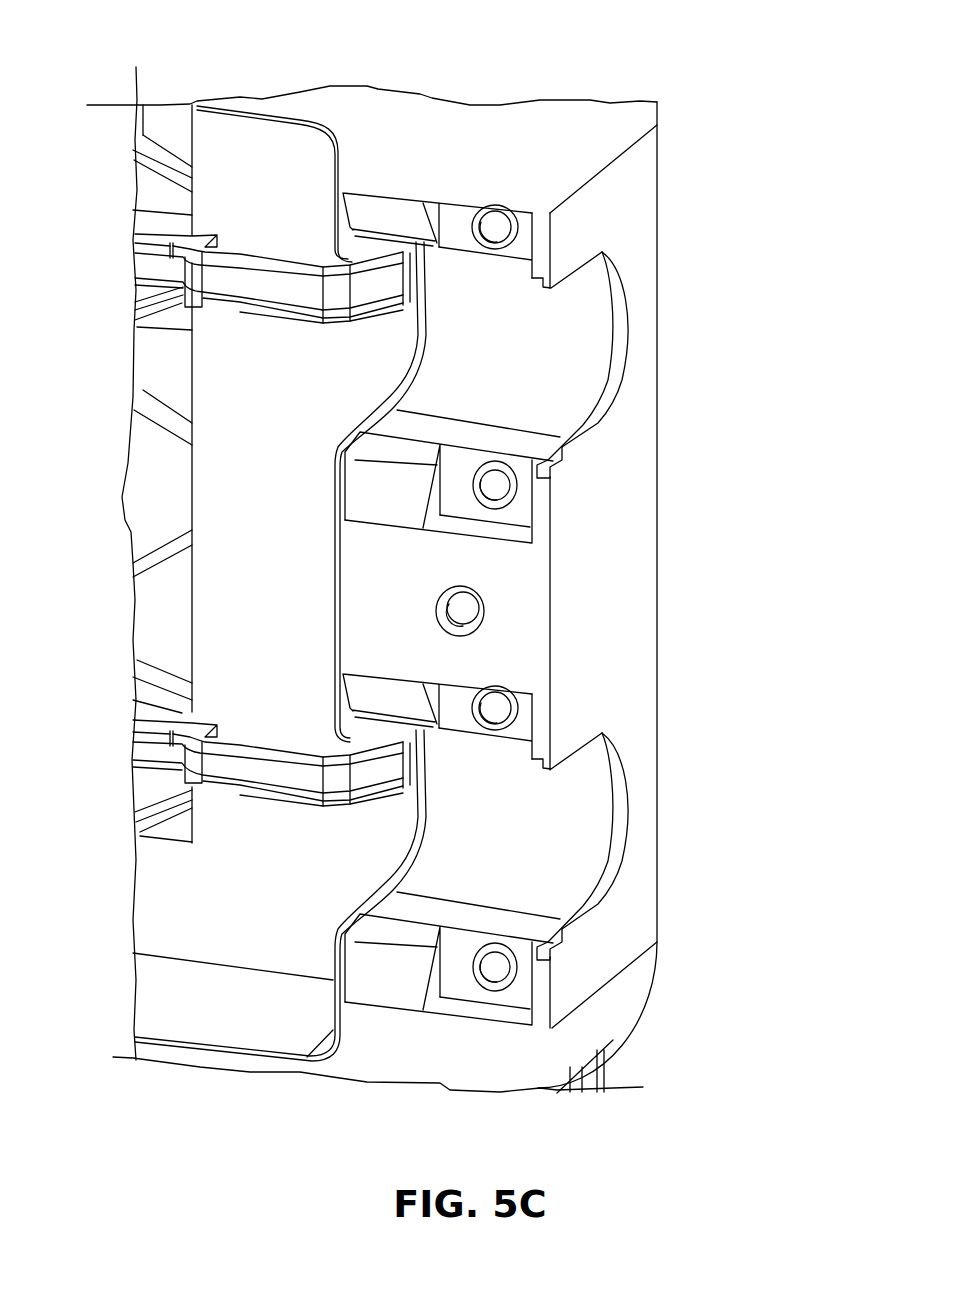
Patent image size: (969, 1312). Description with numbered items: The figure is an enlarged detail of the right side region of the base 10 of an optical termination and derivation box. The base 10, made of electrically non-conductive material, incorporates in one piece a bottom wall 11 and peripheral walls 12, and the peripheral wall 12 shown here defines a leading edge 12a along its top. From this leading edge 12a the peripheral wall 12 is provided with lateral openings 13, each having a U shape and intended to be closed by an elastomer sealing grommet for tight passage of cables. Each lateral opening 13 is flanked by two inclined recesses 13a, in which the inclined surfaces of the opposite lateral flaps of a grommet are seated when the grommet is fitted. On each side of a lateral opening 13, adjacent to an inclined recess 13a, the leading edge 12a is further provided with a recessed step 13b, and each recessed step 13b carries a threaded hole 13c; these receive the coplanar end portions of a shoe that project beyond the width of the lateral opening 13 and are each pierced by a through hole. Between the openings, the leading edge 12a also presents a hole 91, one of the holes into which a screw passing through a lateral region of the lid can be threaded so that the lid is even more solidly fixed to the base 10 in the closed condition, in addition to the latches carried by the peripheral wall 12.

The base 10 is at (615, 91).
The bottom wall 11 is at (210, 897).
The peripheral wall 12 is at (567, 149).
The leading edge 12a is at (455, 150).
The lateral opening 13 is at (576, 306).
The inclined recess 13a is at (404, 214).
The recessed step 13b is at (462, 232).
The threaded hole 13c is at (494, 233).
The hole 91 is at (460, 617).